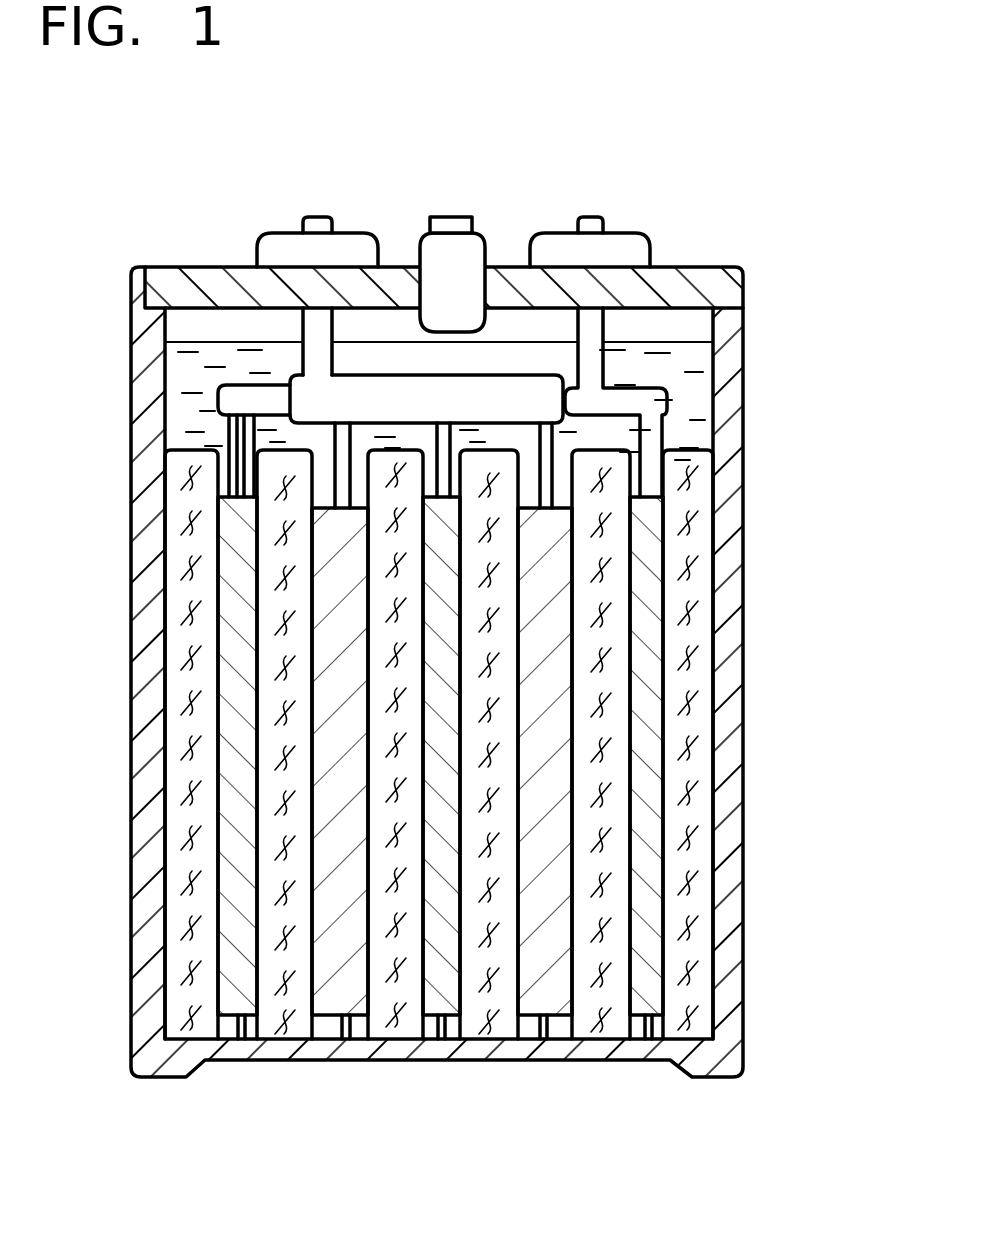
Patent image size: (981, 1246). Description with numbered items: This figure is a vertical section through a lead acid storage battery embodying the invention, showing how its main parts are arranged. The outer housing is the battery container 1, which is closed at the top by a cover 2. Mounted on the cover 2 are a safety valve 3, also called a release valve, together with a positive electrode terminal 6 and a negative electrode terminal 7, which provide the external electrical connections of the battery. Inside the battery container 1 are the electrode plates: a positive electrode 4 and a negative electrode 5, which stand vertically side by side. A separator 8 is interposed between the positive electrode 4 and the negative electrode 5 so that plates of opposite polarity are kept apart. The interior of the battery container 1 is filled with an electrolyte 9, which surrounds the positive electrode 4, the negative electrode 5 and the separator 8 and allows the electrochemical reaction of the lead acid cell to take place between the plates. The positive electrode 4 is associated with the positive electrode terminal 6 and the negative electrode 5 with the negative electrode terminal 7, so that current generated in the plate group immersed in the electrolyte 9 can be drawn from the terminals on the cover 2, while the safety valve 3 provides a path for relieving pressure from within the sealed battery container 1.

The battery container 1 is at (731, 400).
The cover 2 is at (696, 277).
The safety valve 3 is at (482, 240).
The positive electrode 4 is at (550, 637).
The negative electrode 5 is at (647, 780).
The positive electrode terminal 6 is at (312, 217).
The negative electrode terminal 7 is at (603, 217).
The separator 8 is at (618, 678).
The electrolyte 9 is at (182, 372).